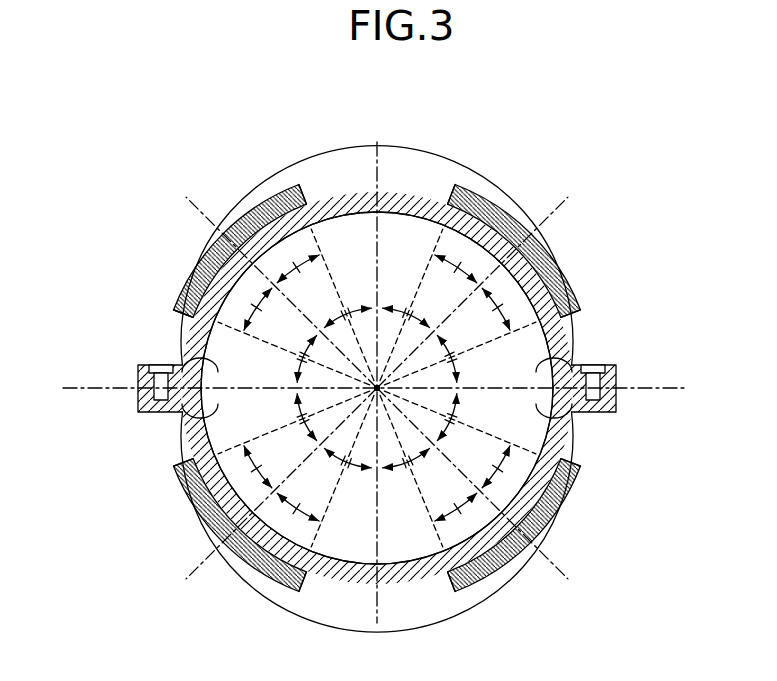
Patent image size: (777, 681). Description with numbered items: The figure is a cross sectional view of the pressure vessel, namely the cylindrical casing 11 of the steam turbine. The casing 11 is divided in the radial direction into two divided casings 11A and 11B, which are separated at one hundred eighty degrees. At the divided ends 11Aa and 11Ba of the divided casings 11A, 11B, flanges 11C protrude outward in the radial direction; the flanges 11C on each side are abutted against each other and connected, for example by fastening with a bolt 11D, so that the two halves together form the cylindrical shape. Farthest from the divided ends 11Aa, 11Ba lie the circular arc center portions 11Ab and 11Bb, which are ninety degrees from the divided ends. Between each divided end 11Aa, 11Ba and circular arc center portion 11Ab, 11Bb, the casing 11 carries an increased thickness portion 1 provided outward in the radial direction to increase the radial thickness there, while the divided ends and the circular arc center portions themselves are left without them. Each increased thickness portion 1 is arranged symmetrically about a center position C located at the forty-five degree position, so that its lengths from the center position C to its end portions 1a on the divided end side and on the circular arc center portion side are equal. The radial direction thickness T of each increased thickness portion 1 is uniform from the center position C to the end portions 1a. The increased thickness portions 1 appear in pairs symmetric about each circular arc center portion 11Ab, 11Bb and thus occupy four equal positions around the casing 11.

The increased thickness portion 1 is at (263, 207).
The end portion 1a is at (298, 186).
The casing 11 is at (378, 354).
The divided casing 11A is at (361, 195).
The divided casing 11B is at (405, 584).
The circular arc center portion 11Ab is at (381, 194).
The circular arc center portion 11Bb is at (373, 585).
The divided end 11Aa is at (163, 365).
The divided end 11Ba is at (152, 412).
The flange 11C is at (138, 378).
The bolt 11D is at (142, 364).
The center position C is at (183, 193).
The radial direction thickness T is at (203, 251).